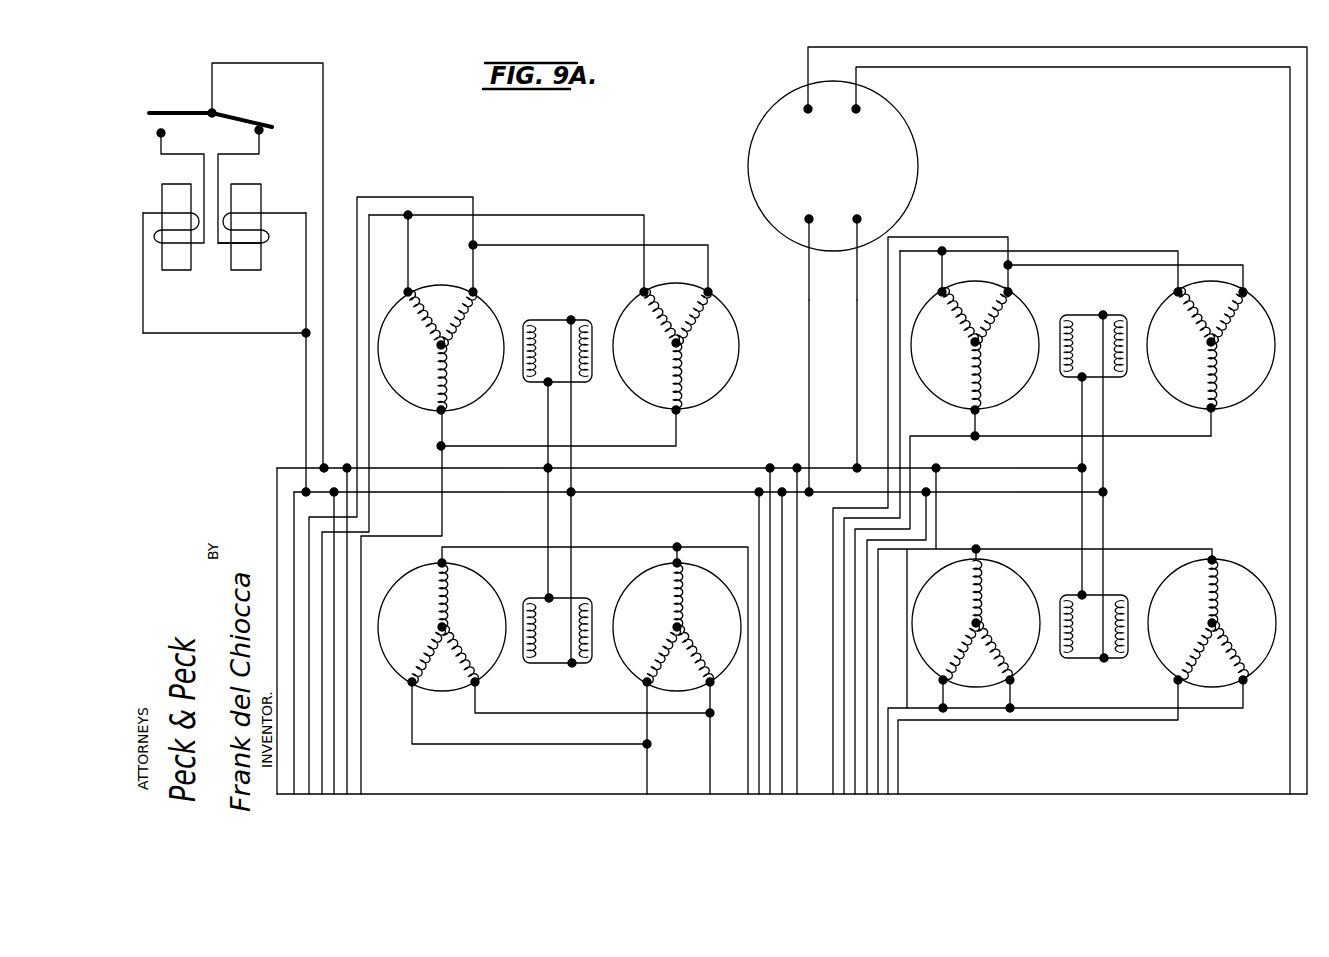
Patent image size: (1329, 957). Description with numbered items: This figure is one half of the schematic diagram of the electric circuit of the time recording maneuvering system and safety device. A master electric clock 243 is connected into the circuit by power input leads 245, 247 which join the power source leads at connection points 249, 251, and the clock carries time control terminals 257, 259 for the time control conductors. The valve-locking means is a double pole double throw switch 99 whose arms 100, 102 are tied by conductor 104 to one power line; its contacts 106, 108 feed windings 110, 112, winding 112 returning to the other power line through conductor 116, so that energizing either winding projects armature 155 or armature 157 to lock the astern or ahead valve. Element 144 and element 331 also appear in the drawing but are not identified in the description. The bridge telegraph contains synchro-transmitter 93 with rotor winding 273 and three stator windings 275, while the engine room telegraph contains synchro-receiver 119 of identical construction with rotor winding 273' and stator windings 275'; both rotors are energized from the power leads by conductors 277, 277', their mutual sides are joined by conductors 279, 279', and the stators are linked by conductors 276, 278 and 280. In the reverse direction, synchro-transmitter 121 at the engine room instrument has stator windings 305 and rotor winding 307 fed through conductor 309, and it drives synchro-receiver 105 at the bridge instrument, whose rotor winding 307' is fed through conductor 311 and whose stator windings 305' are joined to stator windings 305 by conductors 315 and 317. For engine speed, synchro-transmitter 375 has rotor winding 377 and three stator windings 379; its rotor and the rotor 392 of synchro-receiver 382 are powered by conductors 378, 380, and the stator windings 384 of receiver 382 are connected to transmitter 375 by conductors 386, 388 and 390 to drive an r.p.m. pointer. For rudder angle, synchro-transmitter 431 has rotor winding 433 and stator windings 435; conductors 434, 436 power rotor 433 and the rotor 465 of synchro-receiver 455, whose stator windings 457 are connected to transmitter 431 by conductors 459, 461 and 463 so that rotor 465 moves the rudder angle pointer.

The conductor 104 is at (316, 63).
The arm 100 is at (179, 110).
The arm 102 is at (252, 119).
The contact 106 is at (166, 133).
The contact 108 is at (262, 134).
The double pole double throw switch 99 is at (157, 194).
The winding 110 is at (197, 216).
The winding 112 is at (268, 235).
The armature 155 is at (165, 271).
The armature 157 is at (240, 271).
The conductor 116 is at (306, 316).
The conductor 144 is at (218, 336).
The conductor 276 is at (578, 215).
The conductor 278 is at (576, 245).
The synchro-transmitter 93 is at (504, 402).
The stator windings 275 is at (415, 362).
The synchro-receiver 119 is at (758, 364).
The stator windings 275' is at (652, 329).
The rotor winding 273 is at (524, 332).
The rotor winding 273' is at (601, 369).
The conductor 279 is at (574, 390).
The conductor 279' is at (530, 423).
The conductor 280 is at (631, 446).
The conductor 277 is at (681, 459).
The conductor 277' is at (700, 483).
The conductor 311 is at (546, 517).
The conductor 309 is at (575, 564).
The rotor winding 307' is at (526, 611).
The rotor winding 307 is at (600, 651).
The synchro-receiver 105 is at (391, 671).
The stator windings 305' is at (467, 639).
The synchro-transmitter 121 is at (706, 556).
The stator windings 305 is at (700, 641).
The conductor 315 is at (548, 712).
The conductor 317 is at (558, 746).
The conductor 331 is at (652, 762).
The master electric clock 243 is at (918, 153).
The time control terminal 257 is at (807, 115).
The time control terminal 259 is at (857, 115).
The power input lead 245 is at (809, 212).
The power input lead 247 is at (857, 212).
The connection point 251 is at (855, 465).
The connection point 249 is at (810, 496).
The conductor 386 is at (1040, 251).
The conductor 388 is at (1136, 265).
The synchro-transmitter 375 is at (1041, 383).
The stator windings 379 is at (950, 382).
The stator windings 384 is at (1191, 346).
The synchro-receiver 382 is at (1191, 426).
The conductor 390 is at (1032, 438).
The rotor winding 377 is at (1065, 325).
The rotor 392 is at (1122, 320).
The conductor 378 is at (1080, 453).
The conductor 380 is at (1105, 488).
The conductor 434 is at (1082, 526).
The conductor 436 is at (1104, 526).
The rotor winding 433 is at (1065, 615).
The rotor 465 is at (1126, 600).
The conductor 459 is at (1158, 549).
The synchro-transmitter 431 is at (1040, 569).
The stator windings 435 is at (994, 635).
The synchro-receiver 455 is at (1240, 566).
The stator windings 457 is at (1231, 631).
The conductor 461 is at (1096, 702).
The conductor 463 is at (1093, 718).